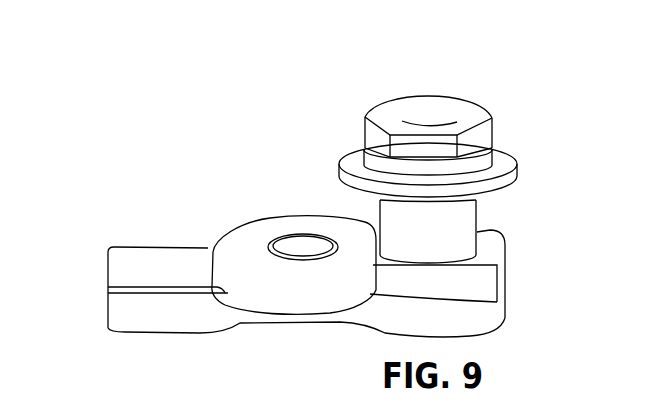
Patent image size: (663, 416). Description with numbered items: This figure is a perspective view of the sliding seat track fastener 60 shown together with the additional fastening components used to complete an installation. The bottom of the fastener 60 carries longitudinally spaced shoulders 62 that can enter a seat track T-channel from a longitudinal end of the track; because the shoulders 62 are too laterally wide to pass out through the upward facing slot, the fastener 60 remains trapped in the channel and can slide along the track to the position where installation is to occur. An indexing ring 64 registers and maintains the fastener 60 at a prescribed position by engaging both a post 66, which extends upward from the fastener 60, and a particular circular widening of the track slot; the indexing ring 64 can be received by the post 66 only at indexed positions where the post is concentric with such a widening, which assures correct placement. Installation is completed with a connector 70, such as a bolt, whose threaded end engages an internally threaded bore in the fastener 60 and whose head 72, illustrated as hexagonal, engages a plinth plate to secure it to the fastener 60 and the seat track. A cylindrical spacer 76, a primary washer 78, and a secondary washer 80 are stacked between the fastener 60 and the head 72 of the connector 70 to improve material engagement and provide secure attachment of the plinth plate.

The sliding seat track fastener 60 is at (168, 213).
The shoulders 62 is at (140, 310).
The indexing ring 64 is at (247, 233).
The post 66 is at (302, 245).
The connector 70 is at (362, 86).
The head 72 is at (425, 110).
The cylindrical spacer 76 is at (470, 221).
The primary washer 78 is at (515, 172).
The secondary washer 80 is at (490, 153).